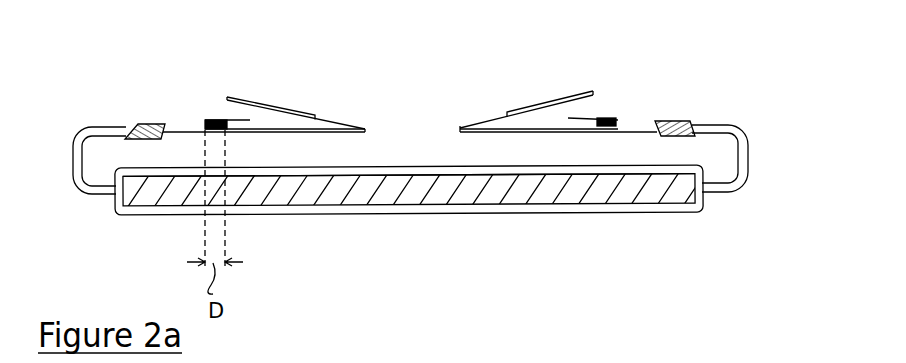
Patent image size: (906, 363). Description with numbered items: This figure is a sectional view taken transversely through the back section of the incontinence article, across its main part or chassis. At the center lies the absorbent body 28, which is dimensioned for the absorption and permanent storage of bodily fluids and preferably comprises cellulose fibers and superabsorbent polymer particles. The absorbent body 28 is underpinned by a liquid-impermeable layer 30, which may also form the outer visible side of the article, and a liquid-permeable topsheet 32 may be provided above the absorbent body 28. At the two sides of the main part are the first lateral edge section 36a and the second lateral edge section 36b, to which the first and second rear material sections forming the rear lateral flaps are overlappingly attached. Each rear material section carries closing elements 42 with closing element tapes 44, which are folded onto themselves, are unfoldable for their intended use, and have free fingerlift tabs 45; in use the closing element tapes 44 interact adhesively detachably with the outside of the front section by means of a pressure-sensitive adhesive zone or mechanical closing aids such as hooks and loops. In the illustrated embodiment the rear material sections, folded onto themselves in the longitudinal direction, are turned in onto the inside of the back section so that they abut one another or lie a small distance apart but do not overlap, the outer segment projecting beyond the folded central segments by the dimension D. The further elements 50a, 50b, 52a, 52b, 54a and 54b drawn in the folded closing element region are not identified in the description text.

The absorbent body 28 is at (573, 197).
The liquid-impermeable layer 30 is at (620, 212).
The liquid-permeable topsheet 32 is at (656, 168).
The first lateral edge section 36a is at (135, 124).
The second lateral edge section 36b is at (682, 121).
The closing element 42 is at (417, 92).
The closing element tape 44 is at (205, 120).
The fingerlift tab 45 is at (218, 120).
The first sloped plate 50a is at (315, 115).
The second sloped plate 50b is at (507, 112).
The first tab 52a is at (208, 120).
The second tab 52b is at (580, 118).
The first base plate 54a is at (365, 128).
The second base plate 54b is at (460, 127).